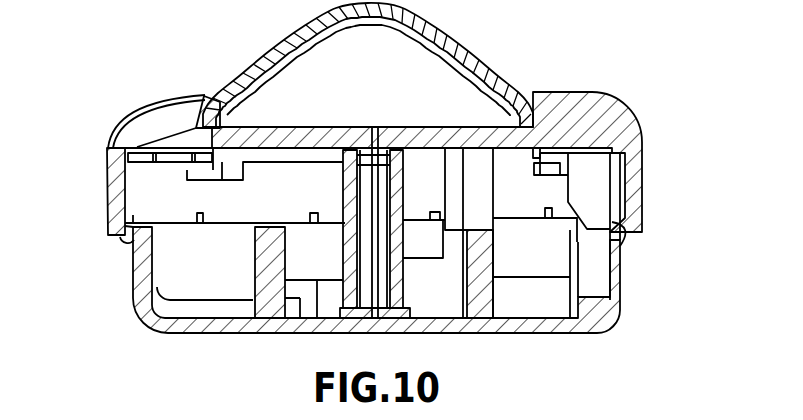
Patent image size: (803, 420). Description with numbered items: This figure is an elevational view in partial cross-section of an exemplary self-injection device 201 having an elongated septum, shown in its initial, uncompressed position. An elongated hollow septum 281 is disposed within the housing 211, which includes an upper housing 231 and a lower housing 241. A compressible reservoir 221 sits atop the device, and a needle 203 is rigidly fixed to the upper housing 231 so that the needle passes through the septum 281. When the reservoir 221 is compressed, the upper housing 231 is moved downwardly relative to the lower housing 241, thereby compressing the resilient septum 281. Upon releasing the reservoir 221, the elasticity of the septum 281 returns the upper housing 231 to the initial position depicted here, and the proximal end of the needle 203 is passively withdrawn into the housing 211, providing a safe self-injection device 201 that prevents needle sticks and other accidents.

The self-injection device 201 is at (381, 194).
The needle 203 is at (365, 272).
The housing 211 is at (633, 96).
The reservoir 221 is at (513, 54).
The upper housing 231 is at (647, 167).
The lower housing 241 is at (615, 272).
The septum 281 is at (410, 292).